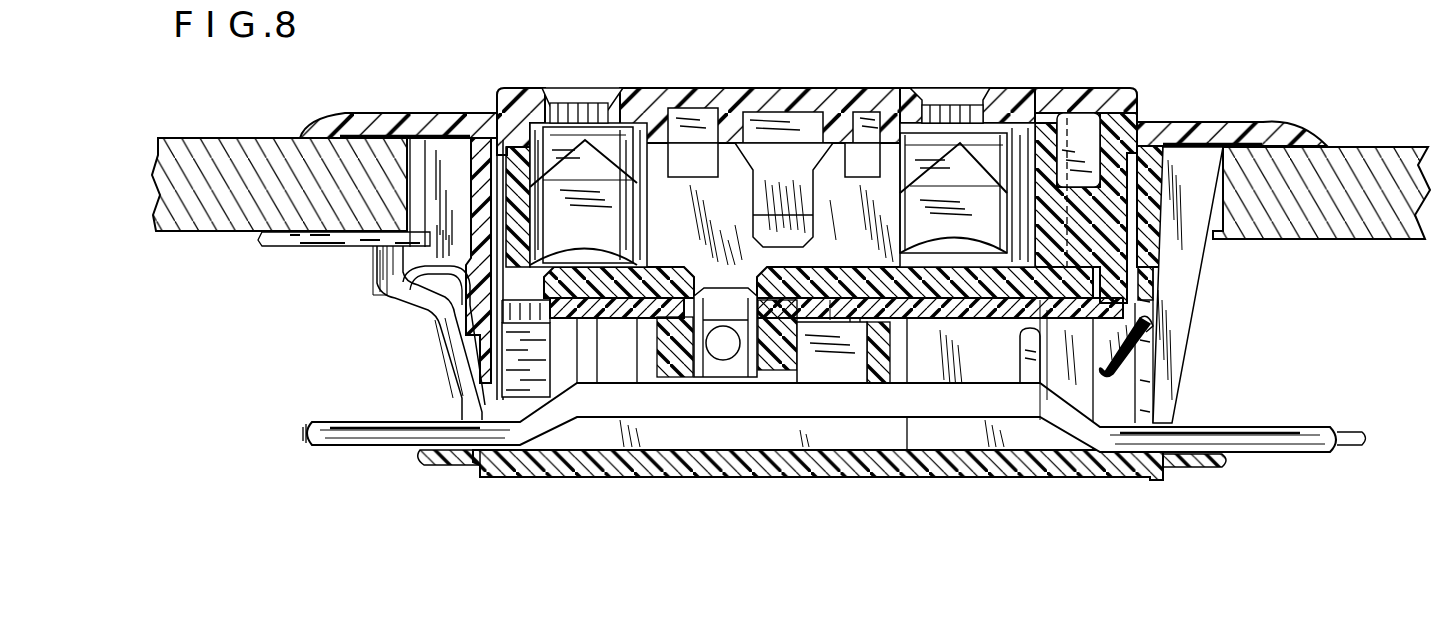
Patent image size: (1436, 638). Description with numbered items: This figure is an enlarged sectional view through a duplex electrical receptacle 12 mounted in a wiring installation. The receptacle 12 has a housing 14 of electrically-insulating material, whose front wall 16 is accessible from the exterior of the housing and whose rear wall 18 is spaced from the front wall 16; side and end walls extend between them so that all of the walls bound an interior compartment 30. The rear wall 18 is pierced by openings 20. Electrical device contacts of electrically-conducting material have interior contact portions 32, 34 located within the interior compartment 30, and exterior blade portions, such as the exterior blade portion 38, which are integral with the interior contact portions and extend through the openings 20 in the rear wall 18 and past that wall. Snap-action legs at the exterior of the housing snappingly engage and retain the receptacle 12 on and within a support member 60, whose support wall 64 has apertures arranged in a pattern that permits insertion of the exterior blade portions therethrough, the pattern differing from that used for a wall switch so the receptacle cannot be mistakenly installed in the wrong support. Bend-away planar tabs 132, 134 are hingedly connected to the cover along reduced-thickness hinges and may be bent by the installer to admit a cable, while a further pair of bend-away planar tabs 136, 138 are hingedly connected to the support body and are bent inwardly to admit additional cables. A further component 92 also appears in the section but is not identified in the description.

The duplex electrical receptacle 12 is at (522, 74).
The housing 14 is at (709, 72).
The front wall 16 is at (1063, 88).
The rear wall 18 is at (1115, 310).
The openings 20 is at (683, 300).
The interior compartment 30 is at (663, 190).
The interior contact portion 32 is at (993, 112).
The interior contact portion 34 is at (945, 183).
The exterior blade portion 38 is at (742, 368).
The support member 60 is at (421, 104).
The support wall 64 is at (965, 318).
The lead wire 92 is at (348, 413).
The bend-away planar tab 132 is at (422, 458).
The bend-away planar tab 134 is at (1213, 466).
The bend-away planar tab 136 is at (488, 383).
The bend-away planar tab 138 is at (1122, 347).